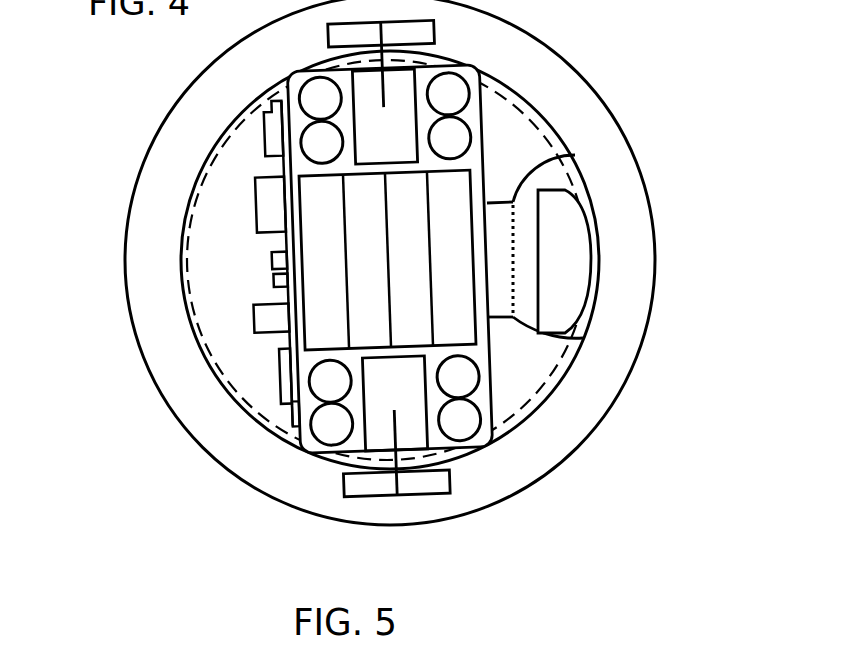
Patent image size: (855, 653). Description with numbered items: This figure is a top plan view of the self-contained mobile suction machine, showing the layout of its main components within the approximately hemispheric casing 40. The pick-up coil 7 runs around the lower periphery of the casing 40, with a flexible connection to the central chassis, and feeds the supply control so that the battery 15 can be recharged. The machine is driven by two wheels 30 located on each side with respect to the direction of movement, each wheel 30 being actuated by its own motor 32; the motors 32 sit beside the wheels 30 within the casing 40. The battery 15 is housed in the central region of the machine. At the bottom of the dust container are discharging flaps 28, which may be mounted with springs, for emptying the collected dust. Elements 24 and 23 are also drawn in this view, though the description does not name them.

The pick-up coil 7 is at (137, 268).
The approximately hemispheric casing 40 is at (632, 388).
The discharging flaps 28 is at (453, 317).
The battery 15 is at (453, 142).
The motor 32 is at (387, 133).
The wheel 30 is at (408, 36).
The connector 24 is at (575, 155).
The motor housing 23 is at (563, 272).